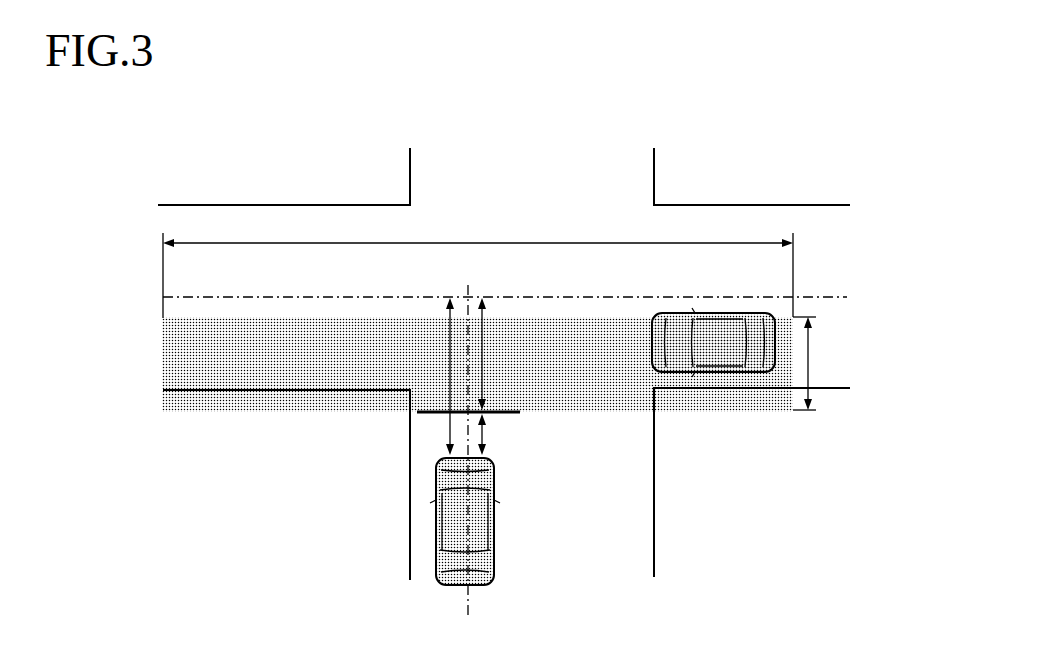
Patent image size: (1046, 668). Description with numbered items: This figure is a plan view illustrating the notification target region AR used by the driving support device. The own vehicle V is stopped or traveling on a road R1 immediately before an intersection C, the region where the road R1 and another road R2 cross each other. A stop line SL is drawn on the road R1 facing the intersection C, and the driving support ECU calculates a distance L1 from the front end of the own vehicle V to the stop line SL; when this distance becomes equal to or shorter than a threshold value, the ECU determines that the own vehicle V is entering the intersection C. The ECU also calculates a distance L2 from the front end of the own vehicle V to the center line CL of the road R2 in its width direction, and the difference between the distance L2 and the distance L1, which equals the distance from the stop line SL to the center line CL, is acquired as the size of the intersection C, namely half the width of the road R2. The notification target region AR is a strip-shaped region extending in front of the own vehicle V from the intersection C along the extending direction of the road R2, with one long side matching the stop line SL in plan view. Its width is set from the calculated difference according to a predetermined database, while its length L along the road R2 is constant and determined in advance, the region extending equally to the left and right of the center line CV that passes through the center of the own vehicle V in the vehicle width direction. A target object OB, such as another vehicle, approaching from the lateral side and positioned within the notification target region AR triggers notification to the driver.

The intersection C is at (479, 361).
The road R1 is at (628, 510).
The road R2 is at (197, 282).
The center line CL is at (838, 296).
The center line CV is at (470, 612).
The length L is at (468, 243).
The distance L1 is at (485, 432).
The distance L2 is at (448, 367).
The stop line SL is at (510, 414).
The notification target region AR is at (707, 412).
The vehicle V is at (495, 537).
The target object OB is at (740, 372).